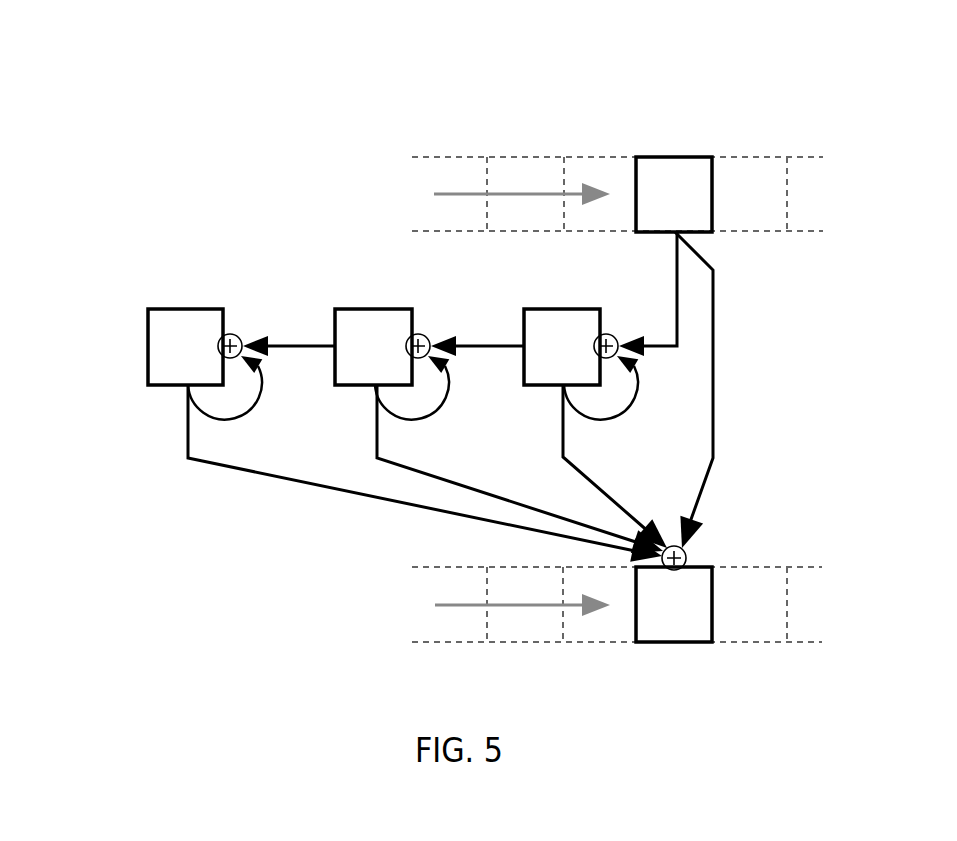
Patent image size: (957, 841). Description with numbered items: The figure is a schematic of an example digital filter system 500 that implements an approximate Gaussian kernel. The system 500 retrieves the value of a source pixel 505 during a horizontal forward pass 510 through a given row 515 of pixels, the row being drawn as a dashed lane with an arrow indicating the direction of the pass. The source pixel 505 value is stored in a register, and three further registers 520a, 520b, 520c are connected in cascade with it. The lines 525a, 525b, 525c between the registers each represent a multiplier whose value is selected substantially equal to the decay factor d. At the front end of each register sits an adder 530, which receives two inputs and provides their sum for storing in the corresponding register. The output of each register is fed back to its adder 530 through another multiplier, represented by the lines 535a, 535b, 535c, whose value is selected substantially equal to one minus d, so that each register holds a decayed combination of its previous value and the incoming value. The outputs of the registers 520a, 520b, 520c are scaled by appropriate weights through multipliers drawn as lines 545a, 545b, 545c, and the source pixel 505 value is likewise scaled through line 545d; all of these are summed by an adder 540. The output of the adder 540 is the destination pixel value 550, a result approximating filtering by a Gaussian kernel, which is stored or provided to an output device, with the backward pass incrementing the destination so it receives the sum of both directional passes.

The digital filter system 500 is at (862, 65).
The row 515 is at (378, 137).
The horizontal forward pass 510 is at (523, 195).
The source pixel 505 is at (674, 194).
The destination pixel value 550 is at (674, 604).
The register 520a is at (562, 337).
The register 520b is at (373, 337).
The register 520c is at (185, 337).
The adder 530 is at (238, 330).
The line 525a is at (648, 294).
The line 525b is at (477, 341).
The line 525c is at (289, 340).
The line 535a is at (621, 400).
The line 535b is at (433, 394).
The line 535c is at (244, 399).
The line 545a is at (615, 466).
The line 545b is at (520, 469).
The line 545c is at (425, 473).
The line 545d is at (716, 390).
The adder 540 is at (702, 545).